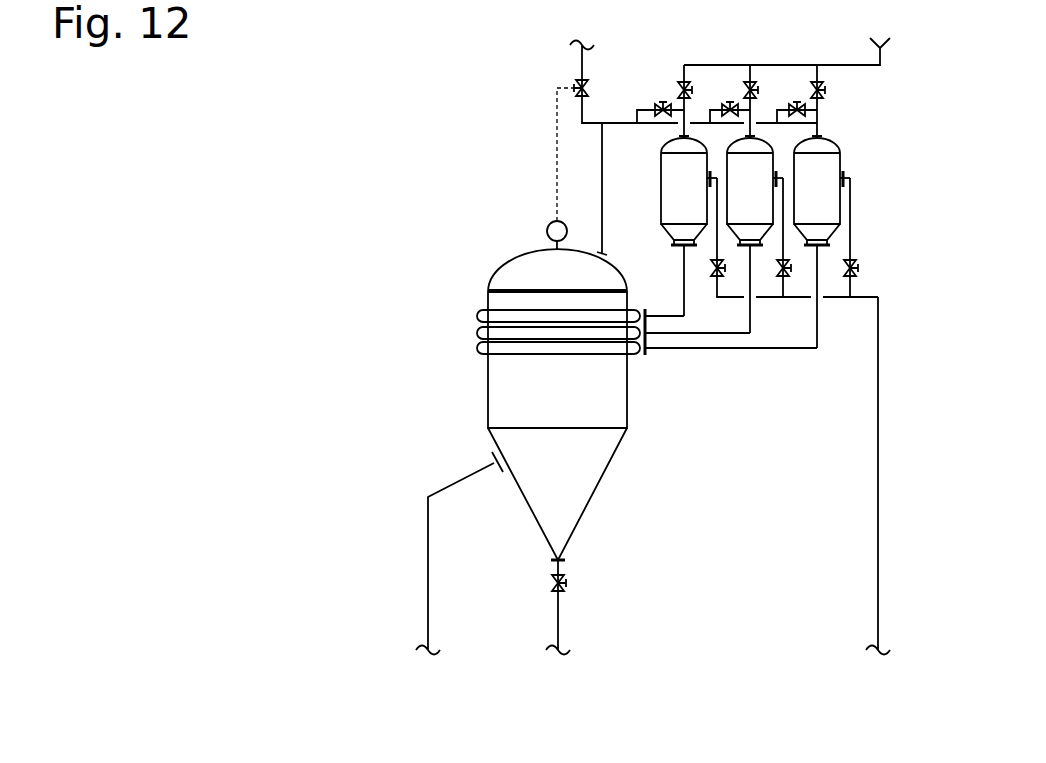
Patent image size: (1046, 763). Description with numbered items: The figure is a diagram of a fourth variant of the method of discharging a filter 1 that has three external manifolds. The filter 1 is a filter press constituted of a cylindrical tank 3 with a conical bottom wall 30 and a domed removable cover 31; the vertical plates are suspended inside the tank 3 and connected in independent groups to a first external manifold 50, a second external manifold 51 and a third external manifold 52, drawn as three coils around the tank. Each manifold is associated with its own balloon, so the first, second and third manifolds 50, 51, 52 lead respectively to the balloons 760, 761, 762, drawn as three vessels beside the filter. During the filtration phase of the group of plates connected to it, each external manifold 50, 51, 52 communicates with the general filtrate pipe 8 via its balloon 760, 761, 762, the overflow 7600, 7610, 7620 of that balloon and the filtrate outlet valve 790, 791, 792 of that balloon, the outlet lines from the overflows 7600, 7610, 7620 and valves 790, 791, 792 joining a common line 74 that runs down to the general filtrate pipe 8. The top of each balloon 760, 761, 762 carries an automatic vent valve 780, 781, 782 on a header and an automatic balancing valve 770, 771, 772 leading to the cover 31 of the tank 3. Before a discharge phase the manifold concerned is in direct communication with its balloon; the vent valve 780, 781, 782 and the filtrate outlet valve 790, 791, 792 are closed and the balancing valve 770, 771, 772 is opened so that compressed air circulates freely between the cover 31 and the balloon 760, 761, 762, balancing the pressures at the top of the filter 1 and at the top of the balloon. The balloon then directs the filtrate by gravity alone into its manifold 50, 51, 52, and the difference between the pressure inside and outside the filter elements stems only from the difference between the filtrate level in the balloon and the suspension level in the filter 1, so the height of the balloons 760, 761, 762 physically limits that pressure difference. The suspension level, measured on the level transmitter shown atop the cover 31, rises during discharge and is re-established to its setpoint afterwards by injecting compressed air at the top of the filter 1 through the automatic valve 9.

The filter 1 is at (416, 214).
The tank 3 is at (505, 405).
The conical bottom wall 30 is at (540, 515).
The domed removable cover 31 is at (505, 275).
The first external manifold 50 is at (477, 348).
The second external manifold 51 is at (477, 333).
The third external manifold 52 is at (477, 316).
The general filtrate pipe 8 is at (882, 581).
The automatic valve 9 is at (577, 82).
The discharge pipe 74 is at (851, 245).
The balloon 760 is at (675, 178).
The balloon 761 is at (758, 167).
The balloon 762 is at (823, 168).
The overflow 7600 is at (708, 179).
The overflow 7610 is at (780, 178).
The overflow 7620 is at (848, 180).
The automatic balancing valve 770 is at (657, 106).
The automatic balancing valve 771 is at (724, 106).
The automatic balancing valve 772 is at (790, 106).
The automatic vent valve 780 is at (680, 86).
The automatic vent valve 781 is at (745, 86).
The automatic vent valve 782 is at (811, 86).
The filtrate outlet valve 790 is at (722, 278).
The filtrate outlet valve 791 is at (788, 278).
The filtrate outlet valve 792 is at (855, 278).